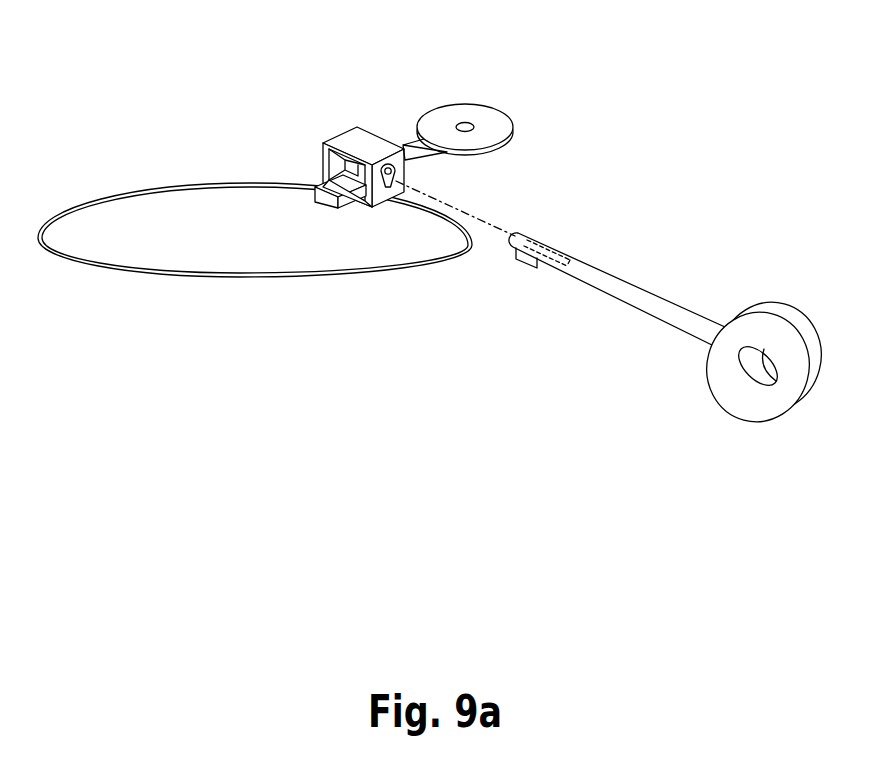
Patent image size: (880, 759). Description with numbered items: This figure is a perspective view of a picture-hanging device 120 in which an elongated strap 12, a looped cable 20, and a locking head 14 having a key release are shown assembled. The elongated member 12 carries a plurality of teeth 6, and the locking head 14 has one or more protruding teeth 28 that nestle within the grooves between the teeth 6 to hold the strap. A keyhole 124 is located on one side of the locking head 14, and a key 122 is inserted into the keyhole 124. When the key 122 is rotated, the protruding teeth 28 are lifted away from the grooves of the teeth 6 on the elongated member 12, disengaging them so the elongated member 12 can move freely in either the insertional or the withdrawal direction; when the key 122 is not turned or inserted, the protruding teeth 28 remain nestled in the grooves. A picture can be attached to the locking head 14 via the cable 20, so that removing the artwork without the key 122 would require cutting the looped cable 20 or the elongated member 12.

The plurality of teeth 6 is at (443, 158).
The elongated strap 12 is at (407, 128).
The locking head 14 is at (340, 122).
The cable 20 is at (262, 275).
The protruding teeth 28 is at (348, 180).
The picture-hanging device 120 is at (614, 226).
The key 122 is at (710, 310).
The keyhole 124 is at (388, 190).